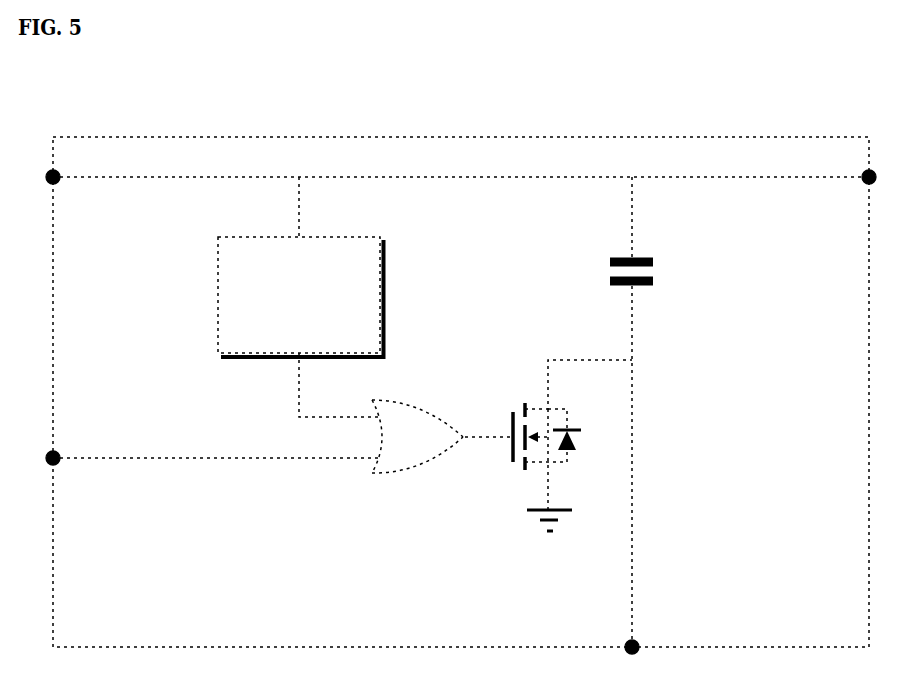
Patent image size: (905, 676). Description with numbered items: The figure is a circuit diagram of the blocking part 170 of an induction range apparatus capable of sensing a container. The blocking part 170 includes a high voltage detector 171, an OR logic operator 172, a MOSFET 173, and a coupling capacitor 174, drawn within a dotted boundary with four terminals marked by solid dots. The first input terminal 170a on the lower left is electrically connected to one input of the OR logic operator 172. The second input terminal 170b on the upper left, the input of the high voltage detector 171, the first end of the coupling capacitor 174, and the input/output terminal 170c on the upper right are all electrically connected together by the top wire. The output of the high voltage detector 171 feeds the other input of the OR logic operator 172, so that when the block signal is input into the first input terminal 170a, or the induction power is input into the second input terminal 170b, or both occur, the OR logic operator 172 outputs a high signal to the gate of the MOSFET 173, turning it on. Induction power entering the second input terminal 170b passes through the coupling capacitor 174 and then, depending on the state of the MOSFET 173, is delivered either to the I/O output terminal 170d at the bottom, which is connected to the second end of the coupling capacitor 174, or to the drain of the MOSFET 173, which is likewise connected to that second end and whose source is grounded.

The blocking part 170 is at (485, 116).
The first input terminal 170a is at (58, 452).
The second input terminal 170b is at (58, 186).
The input/output terminal 170c is at (858, 186).
The I/O output terminal 170d is at (636, 640).
The high voltage detector 171 is at (216, 297).
The OR logic operator 172 is at (418, 468).
The MOSFET 173 is at (513, 400).
The coupling capacitor 174 is at (654, 274).